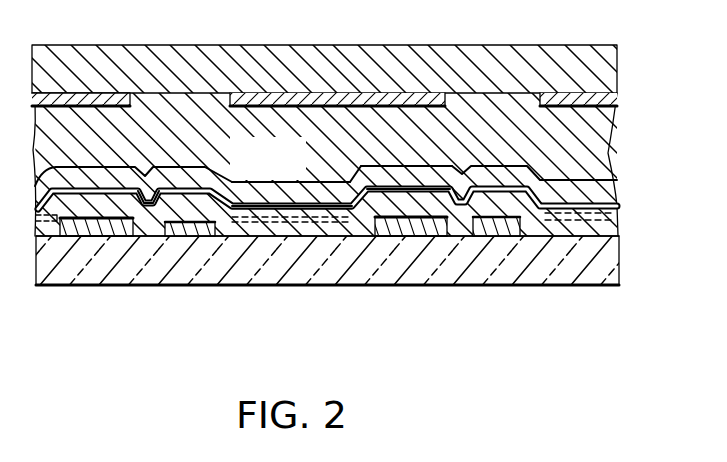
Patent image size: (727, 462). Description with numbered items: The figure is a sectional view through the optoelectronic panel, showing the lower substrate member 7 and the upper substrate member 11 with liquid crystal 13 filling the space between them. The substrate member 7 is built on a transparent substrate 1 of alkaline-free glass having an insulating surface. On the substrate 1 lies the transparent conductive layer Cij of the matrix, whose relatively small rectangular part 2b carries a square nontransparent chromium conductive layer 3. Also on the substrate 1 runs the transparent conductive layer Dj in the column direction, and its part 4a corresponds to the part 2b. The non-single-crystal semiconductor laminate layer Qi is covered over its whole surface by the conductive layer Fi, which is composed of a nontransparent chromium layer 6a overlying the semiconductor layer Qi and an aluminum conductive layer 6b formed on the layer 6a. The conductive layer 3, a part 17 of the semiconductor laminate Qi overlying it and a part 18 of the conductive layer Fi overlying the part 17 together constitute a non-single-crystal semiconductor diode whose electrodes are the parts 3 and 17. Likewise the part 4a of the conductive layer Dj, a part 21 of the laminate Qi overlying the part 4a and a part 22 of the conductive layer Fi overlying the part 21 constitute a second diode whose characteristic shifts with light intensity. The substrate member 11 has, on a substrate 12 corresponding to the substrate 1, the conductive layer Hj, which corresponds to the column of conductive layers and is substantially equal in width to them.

The substrate 1 is at (313, 287).
The rectangular part of conductive layer Cij 2b is at (101, 236).
The conductive layer 3 is at (127, 237).
The part of conductive layer Dj 4a is at (169, 237).
The nontransparent layer 6a is at (276, 159).
The conductive layer 6b is at (276, 159).
The substrate member 7 is at (628, 180).
The substrate member 11 is at (628, 33).
The substrate 12 is at (447, 60).
The liquid crystal 13 is at (607, 137).
The part of semiconductor layer laminate member Qi 17 is at (401, 184).
The part of conductive layer Fi 18 is at (425, 165).
The part of semiconductor layer laminate member Qi 21 is at (528, 187).
The part of conductive layer Fi 22 is at (502, 163).
The non-single-crystal semiconductor laminate layer Qi is at (180, 205).
The conductive layer Fi is at (302, 179).
The conductive layer Hj is at (397, 97).
The conductive layer Cij is at (407, 236).
The conductive layer Dj is at (487, 236).